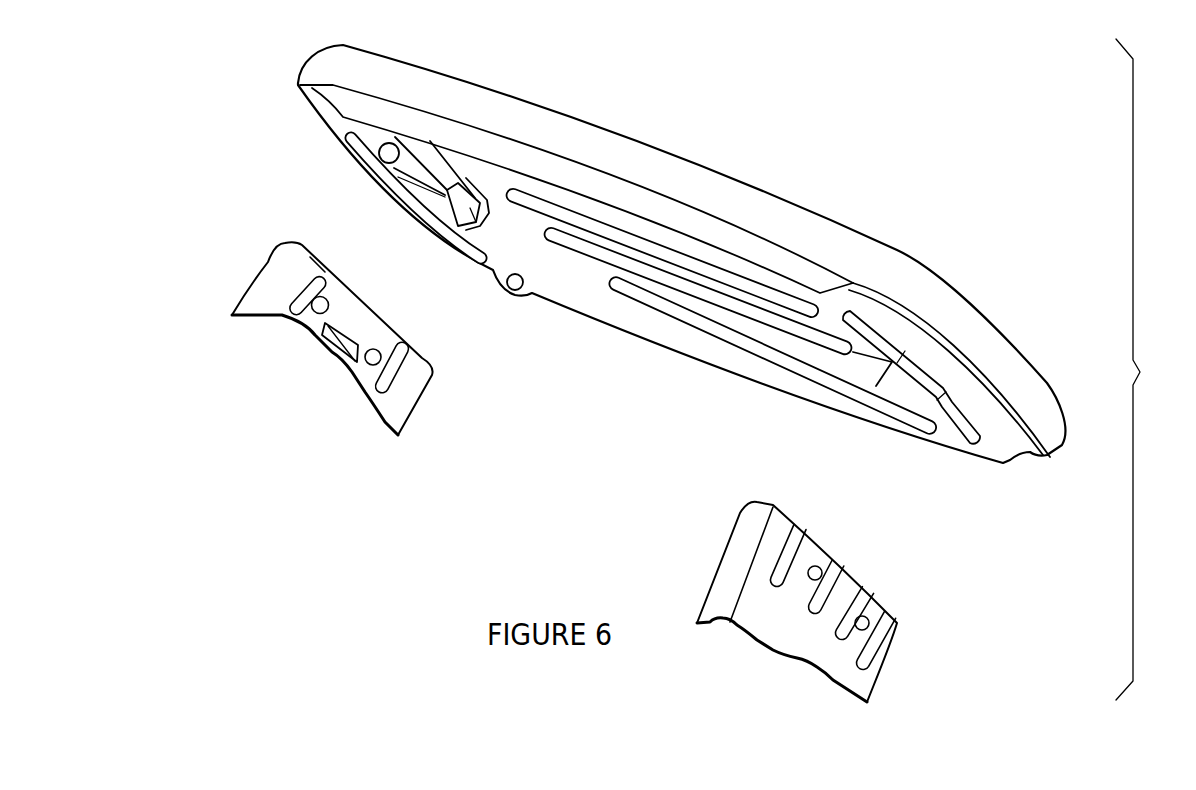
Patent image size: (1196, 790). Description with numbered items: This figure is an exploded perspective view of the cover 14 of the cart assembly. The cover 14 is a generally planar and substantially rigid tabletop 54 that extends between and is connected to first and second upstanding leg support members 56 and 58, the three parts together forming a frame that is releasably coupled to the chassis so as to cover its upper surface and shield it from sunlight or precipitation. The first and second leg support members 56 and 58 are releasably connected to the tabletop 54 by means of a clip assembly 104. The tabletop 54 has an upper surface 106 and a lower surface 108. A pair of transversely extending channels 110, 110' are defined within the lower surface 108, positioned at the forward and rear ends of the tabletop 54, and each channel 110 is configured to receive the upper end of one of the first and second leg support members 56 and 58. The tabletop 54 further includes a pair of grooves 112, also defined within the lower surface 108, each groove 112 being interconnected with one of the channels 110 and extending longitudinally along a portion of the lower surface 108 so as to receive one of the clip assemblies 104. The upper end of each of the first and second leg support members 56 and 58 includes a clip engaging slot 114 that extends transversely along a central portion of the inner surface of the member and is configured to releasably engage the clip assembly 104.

The cover 14 is at (1138, 369).
The tabletop 54 is at (565, 133).
The first upstanding leg support member 56 is at (887, 645).
The second upstanding leg support member 58 is at (258, 290).
The clip assembly 104 is at (435, 205).
The upper surface 106 is at (843, 221).
The lower surface 108 is at (777, 257).
The channel 110 is at (930, 355).
The hole 110' is at (412, 94).
The groove 112 is at (467, 190).
The clip engaging slot 114 is at (339, 343).